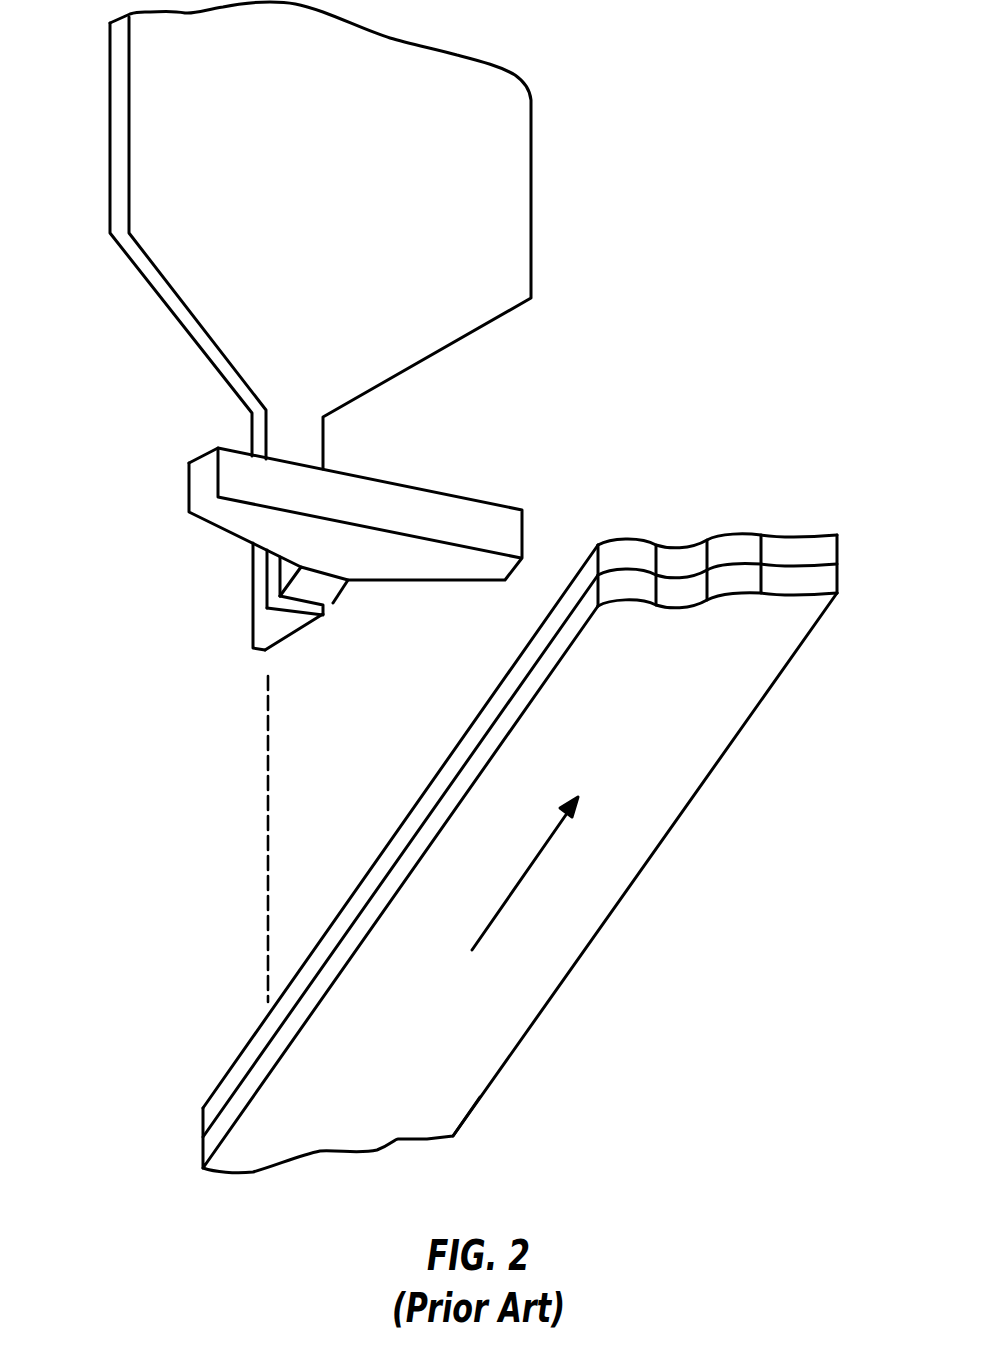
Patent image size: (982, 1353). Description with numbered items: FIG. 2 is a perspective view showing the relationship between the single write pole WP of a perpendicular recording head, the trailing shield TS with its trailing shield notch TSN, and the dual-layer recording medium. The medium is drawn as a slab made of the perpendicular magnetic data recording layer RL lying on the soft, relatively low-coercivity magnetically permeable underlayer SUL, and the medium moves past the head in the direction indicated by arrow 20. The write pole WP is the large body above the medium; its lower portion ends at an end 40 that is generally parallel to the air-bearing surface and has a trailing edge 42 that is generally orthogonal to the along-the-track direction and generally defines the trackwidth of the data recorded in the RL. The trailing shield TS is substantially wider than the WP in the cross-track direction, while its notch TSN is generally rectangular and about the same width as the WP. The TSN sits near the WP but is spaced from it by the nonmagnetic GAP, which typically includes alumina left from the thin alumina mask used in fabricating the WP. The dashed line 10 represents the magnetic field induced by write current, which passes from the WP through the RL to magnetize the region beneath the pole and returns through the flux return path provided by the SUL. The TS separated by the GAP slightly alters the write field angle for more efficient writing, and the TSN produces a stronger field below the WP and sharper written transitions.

The write pole WP is at (372, 278).
The trailing shield TS is at (343, 496).
The trailing shield notch TSN is at (329, 592).
The gap GAP is at (306, 608).
The end 40 is at (278, 637).
The trailing edge 42 is at (276, 608).
The magnetic field 10 is at (268, 820).
The arrow 20 is at (527, 877).
The perpendicular magnetic data recording layer RL is at (258, 1045).
The soft magnetically permeable underlayer SUL is at (240, 1103).